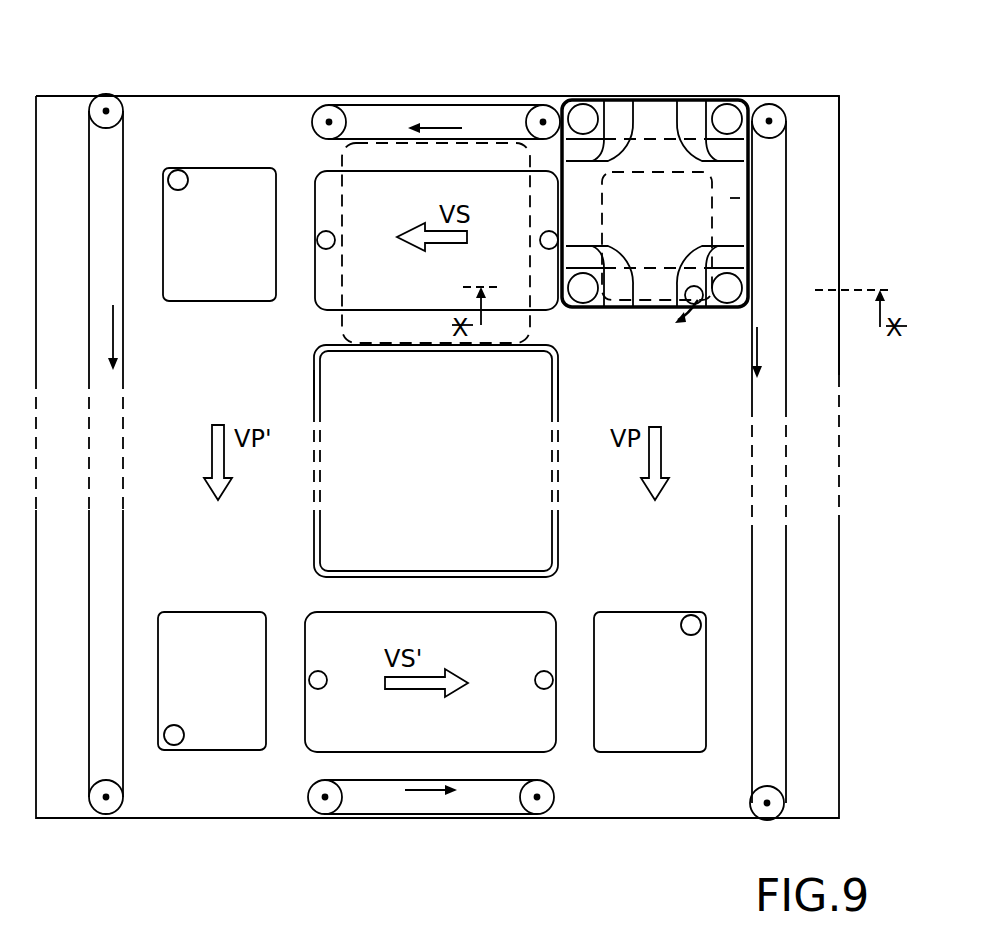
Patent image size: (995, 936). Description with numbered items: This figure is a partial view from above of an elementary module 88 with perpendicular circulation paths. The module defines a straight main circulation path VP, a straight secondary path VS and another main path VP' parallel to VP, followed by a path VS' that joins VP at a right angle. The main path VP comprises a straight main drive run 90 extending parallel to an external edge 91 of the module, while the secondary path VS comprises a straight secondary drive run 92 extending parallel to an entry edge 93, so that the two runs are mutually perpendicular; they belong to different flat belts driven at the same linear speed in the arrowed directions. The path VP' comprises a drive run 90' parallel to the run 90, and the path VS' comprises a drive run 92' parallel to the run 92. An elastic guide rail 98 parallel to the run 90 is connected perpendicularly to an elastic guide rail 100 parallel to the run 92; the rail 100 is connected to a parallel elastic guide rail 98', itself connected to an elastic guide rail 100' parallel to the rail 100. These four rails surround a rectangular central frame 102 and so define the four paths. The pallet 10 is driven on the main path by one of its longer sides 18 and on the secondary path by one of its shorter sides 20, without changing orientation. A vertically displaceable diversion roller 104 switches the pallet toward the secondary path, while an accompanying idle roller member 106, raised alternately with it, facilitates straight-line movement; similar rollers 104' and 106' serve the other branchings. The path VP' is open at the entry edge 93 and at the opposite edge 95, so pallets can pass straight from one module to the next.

The elementary module 88 is at (170, 88).
The entry edge 93 is at (268, 96).
The edge 95 is at (256, 818).
The main drive run 90 is at (735, 462).
The drive run 90' is at (138, 454).
The external edge 91 is at (839, 370).
The secondary drive run 92 is at (436, 158).
The drive run 92' is at (456, 787).
The sides 20 is at (658, 100).
The pallet 10 is at (740, 198).
The sides 18 is at (752, 226).
The diversion roller 104 is at (703, 335).
The diversion rollers 104' is at (432, 457).
The member 106 is at (601, 229).
The rollers 106' is at (435, 461).
The elastic guide rail 100 is at (436, 244).
The elastic guide rail 100' is at (454, 594).
The central frame 102 is at (460, 443).
The elastic guide rail 98 is at (590, 377).
The elastic guide rail 98' is at (282, 375).